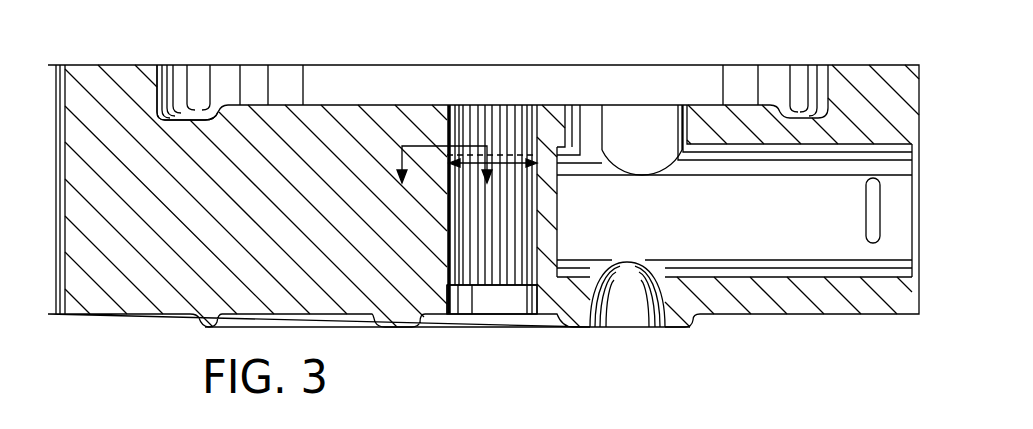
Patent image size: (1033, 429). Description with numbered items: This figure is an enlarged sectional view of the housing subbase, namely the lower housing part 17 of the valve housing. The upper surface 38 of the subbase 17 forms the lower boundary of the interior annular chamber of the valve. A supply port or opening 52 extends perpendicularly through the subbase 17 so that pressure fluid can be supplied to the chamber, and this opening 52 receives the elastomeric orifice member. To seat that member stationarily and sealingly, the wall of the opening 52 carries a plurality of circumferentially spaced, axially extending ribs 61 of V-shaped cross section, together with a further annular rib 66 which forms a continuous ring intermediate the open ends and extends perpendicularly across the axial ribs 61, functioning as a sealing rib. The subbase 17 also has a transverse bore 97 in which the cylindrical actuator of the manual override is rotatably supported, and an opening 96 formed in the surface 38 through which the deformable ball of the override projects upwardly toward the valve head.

The lower housing part 17 is at (104, 86).
The upper surface 38 is at (278, 104).
The ribs 61 is at (533, 122).
The annular rib 66 is at (535, 158).
The supply port 52 is at (527, 298).
The opening 96 is at (673, 117).
The transverse bore 97 is at (776, 270).